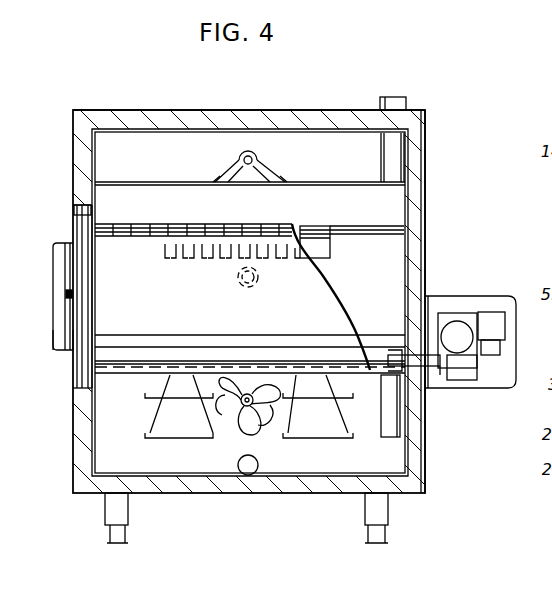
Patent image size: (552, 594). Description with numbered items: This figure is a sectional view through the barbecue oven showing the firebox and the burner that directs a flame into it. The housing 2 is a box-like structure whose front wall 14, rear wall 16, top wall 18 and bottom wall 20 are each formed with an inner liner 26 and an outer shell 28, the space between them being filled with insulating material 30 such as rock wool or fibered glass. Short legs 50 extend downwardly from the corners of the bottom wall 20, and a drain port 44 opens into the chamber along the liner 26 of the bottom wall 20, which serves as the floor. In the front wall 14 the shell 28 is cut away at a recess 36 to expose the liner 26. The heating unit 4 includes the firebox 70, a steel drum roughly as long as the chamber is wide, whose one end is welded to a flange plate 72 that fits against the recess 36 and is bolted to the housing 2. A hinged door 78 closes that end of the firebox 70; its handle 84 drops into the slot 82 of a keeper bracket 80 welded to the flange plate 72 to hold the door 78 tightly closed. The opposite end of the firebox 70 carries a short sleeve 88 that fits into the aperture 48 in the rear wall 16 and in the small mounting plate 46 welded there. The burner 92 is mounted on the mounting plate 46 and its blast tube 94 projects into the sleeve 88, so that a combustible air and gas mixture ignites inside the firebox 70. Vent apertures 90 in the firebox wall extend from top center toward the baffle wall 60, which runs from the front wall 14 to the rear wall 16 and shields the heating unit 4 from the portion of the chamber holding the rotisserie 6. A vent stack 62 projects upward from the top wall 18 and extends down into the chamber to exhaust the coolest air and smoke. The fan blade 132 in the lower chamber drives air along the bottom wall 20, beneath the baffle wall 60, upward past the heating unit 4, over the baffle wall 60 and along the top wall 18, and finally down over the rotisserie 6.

The housing 2 is at (334, 110).
The heating unit 4 is at (366, 388).
The rotisserie 6 is at (238, 150).
The front wall 14 is at (73, 130).
The rear wall 16 is at (425, 133).
The top wall 18 is at (278, 112).
The bottom wall 20 is at (330, 495).
The liner 26 is at (408, 196).
The shell 28 is at (428, 206).
The insulating material 30 is at (164, 118).
The recess 36 is at (78, 218).
The drain port 44 is at (248, 476).
The mounting plate 46 is at (432, 293).
The aperture 48 is at (430, 380).
The legs 50 is at (128, 518).
The baffle wall 60 is at (150, 185).
The vent stack 62 is at (388, 152).
The firebox 70 is at (234, 292).
The flange plate 72 is at (98, 226).
The door 78 is at (78, 265).
The keeper bracket 80 is at (58, 344).
The slot 82 is at (67, 258).
The handle 84 is at (72, 293).
The sleeve 88 is at (405, 395).
The vent apertures 90 is at (316, 240).
The burner 92 is at (495, 320).
The blast tube 94 is at (395, 354).
The fan blade 132 is at (246, 413).